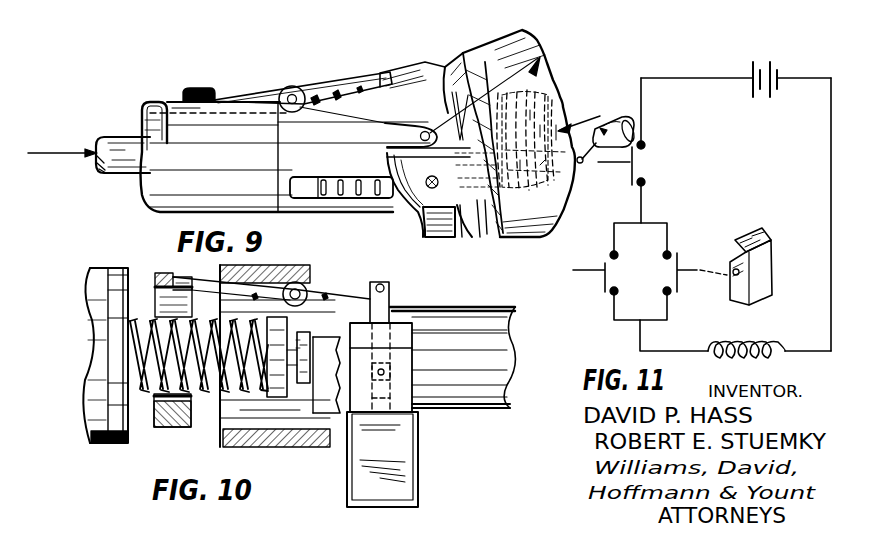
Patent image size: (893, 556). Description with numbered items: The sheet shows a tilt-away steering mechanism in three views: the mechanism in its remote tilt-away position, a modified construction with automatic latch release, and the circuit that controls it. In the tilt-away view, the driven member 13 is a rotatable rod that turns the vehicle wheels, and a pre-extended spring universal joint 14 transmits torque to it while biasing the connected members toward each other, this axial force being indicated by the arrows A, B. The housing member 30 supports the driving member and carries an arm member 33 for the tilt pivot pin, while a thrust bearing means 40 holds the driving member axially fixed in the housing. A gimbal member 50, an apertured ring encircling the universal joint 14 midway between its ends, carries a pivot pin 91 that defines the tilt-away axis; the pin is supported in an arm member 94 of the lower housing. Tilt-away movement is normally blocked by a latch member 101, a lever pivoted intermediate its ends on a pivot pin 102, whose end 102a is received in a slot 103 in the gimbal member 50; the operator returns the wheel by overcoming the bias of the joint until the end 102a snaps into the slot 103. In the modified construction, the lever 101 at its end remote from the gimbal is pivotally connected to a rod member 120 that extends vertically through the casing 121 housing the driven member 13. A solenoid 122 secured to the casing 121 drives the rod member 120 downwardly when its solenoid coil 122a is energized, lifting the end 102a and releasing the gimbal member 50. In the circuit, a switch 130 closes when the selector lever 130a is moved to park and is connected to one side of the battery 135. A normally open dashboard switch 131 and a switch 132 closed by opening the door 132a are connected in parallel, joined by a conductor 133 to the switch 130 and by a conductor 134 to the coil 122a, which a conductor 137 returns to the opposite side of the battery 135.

In FIG. 9, the driven member 13 is at (133, 149).
In FIG. 10, the driven member 13 is at (302, 384).
In FIG. 10, the universal joint 14 is at (205, 396).
In FIG. 9, the housing member 30 is at (540, 57).
In FIG. 9, the arm member 33 is at (458, 238).
In FIG. 9, the thrust bearing means 40 is at (430, 196).
In FIG. 9, the gimbal member 50 is at (441, 236).
In FIG. 10, the gimbal member 50 is at (156, 280).
In FIG. 9, the pivot pin 91 is at (534, 48).
In FIG. 9, the arm member 94 is at (403, 127).
In FIG. 9, the latch member 101 is at (263, 97).
In FIG. 10, the latch member 101 is at (308, 258).
In FIG. 9, the pivot pin 102 is at (293, 95).
In FIG. 10, the pivot pin 102 is at (305, 291).
In FIG. 9, the end of the lever 102a is at (387, 74).
In FIG. 10, the end of the lever 102a is at (180, 282).
In FIG. 10, the slot 103 is at (409, 354).
In FIG. 10, the rod member 120 is at (385, 303).
In FIG. 10, the casing 121 is at (447, 392).
In FIG. 10, the solenoid 122 is at (418, 498).
In FIG. 11, the solenoid coil 122a is at (745, 346).
In FIG. 11, the switch 130 is at (637, 163).
In FIG. 11, the selector lever 130a is at (592, 168).
In FIG. 11, the normally open switch 131 is at (608, 300).
In FIG. 11, the switch 132 is at (673, 254).
In FIG. 11, the door 132a is at (764, 272).
In FIG. 11, the conductor 133 is at (645, 200).
In FIG. 11, the conductor 134 is at (670, 350).
In FIG. 11, the battery 135 is at (770, 63).
In FIG. 11, the conductor 137 is at (830, 158).
In FIG. 9, the arrow A is at (578, 119).
In FIG. 9, the arrow B is at (47, 151).